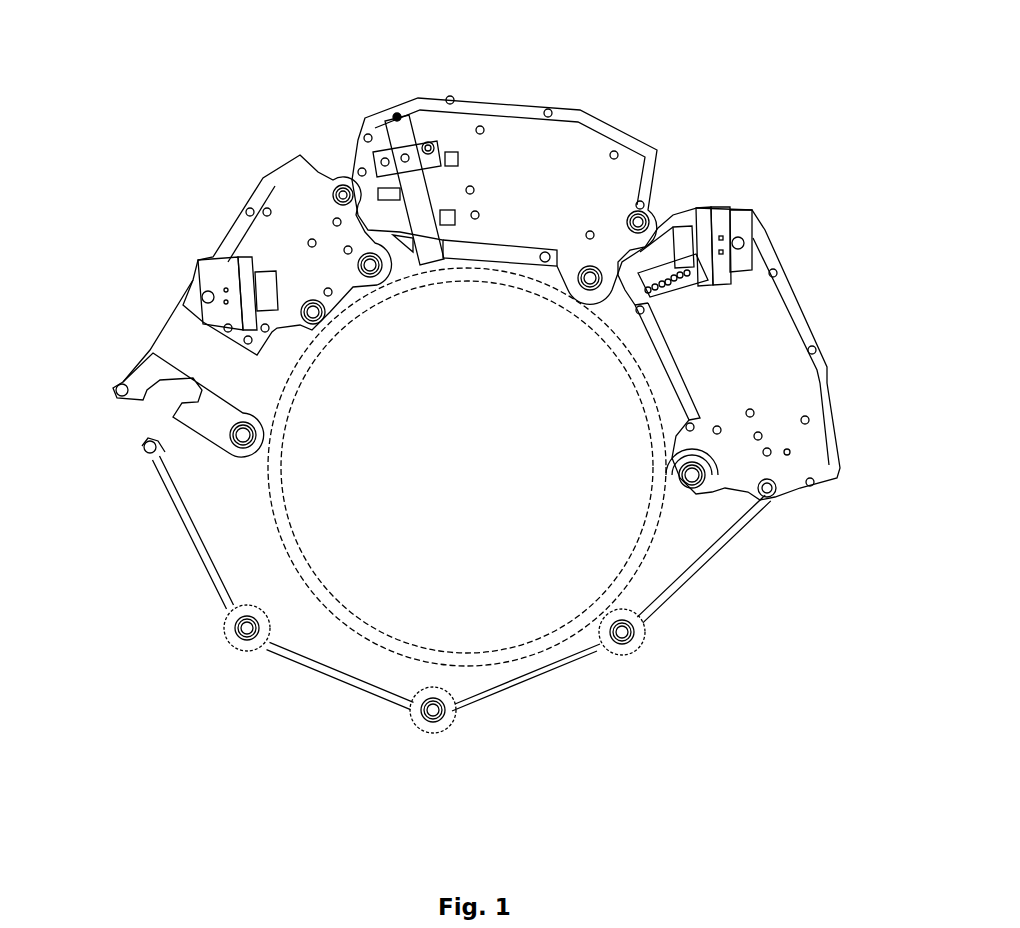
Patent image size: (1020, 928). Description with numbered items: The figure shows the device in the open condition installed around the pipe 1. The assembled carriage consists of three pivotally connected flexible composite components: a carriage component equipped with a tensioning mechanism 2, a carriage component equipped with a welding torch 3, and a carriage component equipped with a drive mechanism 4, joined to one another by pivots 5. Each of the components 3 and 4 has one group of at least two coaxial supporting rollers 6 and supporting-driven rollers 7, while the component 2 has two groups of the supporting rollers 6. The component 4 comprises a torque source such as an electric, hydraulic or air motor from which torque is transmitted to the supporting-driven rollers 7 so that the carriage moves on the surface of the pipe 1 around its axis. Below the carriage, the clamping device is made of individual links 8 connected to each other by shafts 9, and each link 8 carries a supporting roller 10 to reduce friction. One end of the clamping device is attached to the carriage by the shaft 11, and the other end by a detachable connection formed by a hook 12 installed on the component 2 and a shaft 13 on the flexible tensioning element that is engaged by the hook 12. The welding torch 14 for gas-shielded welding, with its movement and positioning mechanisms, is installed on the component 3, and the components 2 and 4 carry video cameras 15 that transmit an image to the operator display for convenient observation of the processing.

The pipe 1 is at (334, 590).
The carriage component equipped with tensioning mechanism 2 is at (258, 186).
The carriage component equipped with welding torch 3 is at (500, 138).
The carriage component equipped with drive mechanism 4 is at (783, 386).
The pivotal connection 5 is at (338, 188).
The supporting rollers 6 is at (374, 285).
The supporting-driven rollers 7 is at (710, 500).
The elements of the clamping device 8 is at (176, 524).
The shafts connecting two elements of the clamping device 9 is at (242, 633).
The supporting rollers of the clamping device 10 is at (223, 627).
The nondetachable connection of the clamping device and carriage 11 is at (778, 492).
The hooks 12 is at (78, 384).
The shaft installed on the flexible tensioning element 13 is at (99, 453).
The welding torch 14 is at (404, 112).
The video cameras 15 is at (203, 273).